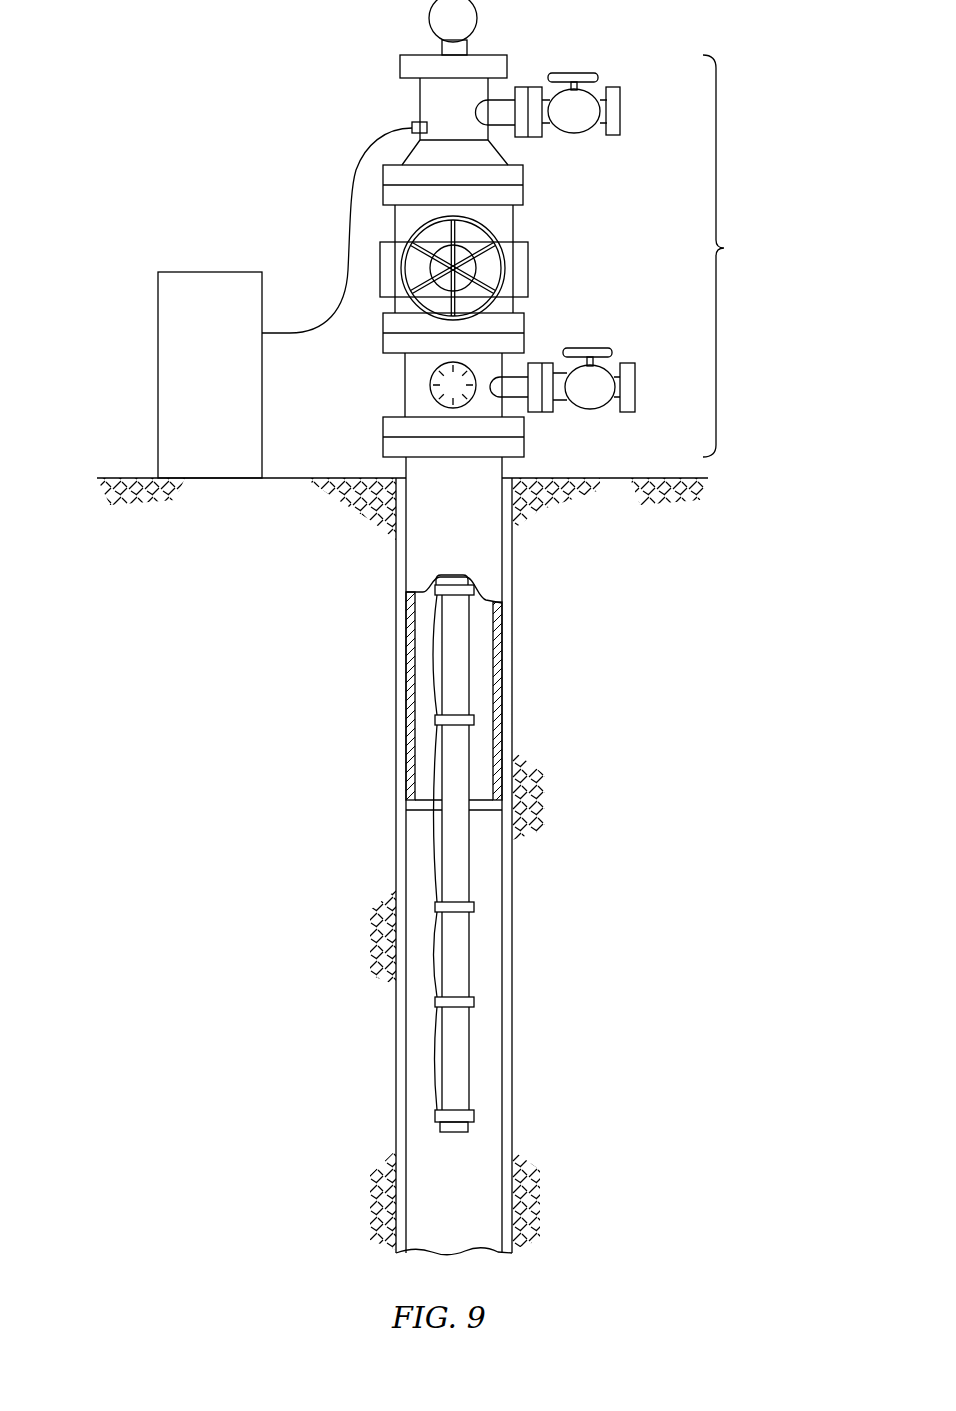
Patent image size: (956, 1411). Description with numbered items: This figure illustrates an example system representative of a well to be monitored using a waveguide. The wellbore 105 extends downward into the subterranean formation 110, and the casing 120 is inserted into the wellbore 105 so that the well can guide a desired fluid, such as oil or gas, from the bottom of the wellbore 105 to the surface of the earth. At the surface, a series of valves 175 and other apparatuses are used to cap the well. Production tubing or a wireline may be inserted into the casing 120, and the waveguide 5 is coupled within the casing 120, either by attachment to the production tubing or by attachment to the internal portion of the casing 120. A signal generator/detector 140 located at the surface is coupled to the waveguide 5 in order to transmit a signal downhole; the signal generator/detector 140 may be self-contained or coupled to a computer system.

The waveguide 5 is at (353, 180).
The wellbore 105 is at (397, 772).
The subterranean formation 110 is at (328, 563).
The casing 120 is at (513, 532).
The signal generator/detector 140 is at (158, 312).
The series of valves 175 is at (718, 248).